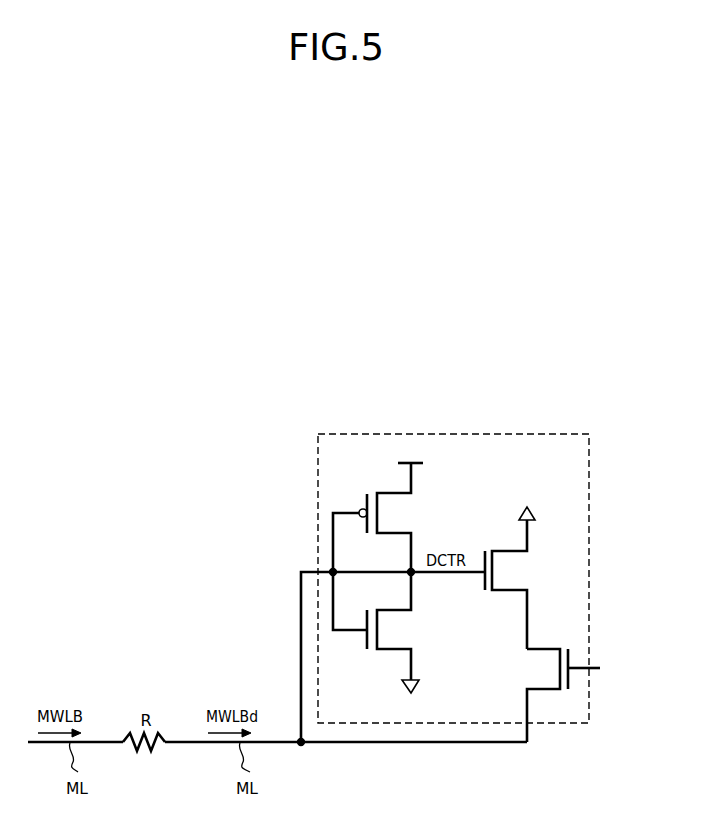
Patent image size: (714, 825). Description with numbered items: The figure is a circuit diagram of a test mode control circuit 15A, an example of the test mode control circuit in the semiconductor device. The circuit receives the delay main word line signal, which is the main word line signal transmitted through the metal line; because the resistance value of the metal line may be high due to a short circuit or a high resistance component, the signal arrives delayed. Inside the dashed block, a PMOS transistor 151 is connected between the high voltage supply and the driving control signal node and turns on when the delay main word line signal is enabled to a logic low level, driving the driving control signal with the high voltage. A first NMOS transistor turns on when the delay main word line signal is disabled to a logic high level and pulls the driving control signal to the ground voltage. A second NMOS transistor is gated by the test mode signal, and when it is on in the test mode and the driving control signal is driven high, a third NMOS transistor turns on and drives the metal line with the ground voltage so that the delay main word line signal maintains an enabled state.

The test mode control circuit 15A is at (589, 487).
The PMOS transistor 151 is at (393, 532).